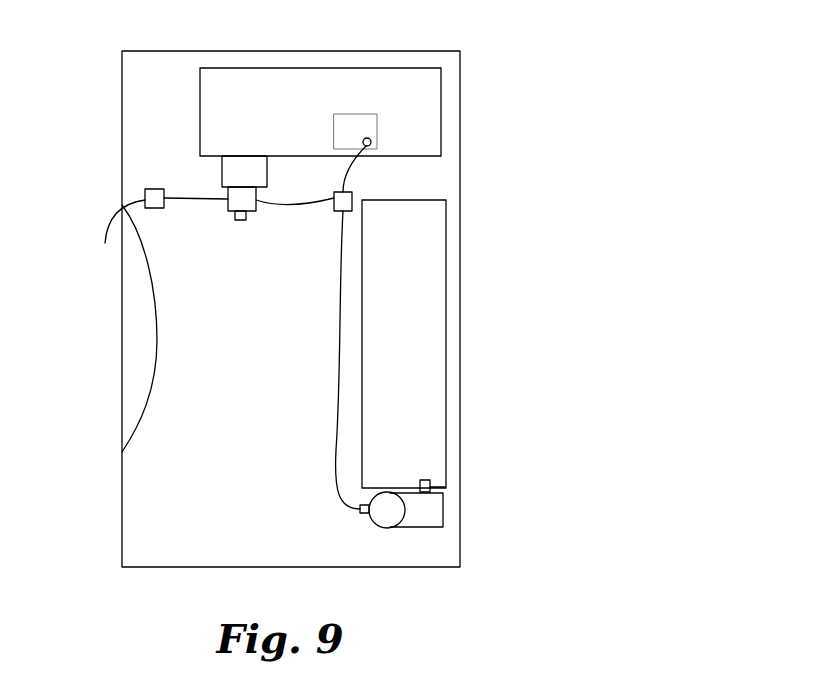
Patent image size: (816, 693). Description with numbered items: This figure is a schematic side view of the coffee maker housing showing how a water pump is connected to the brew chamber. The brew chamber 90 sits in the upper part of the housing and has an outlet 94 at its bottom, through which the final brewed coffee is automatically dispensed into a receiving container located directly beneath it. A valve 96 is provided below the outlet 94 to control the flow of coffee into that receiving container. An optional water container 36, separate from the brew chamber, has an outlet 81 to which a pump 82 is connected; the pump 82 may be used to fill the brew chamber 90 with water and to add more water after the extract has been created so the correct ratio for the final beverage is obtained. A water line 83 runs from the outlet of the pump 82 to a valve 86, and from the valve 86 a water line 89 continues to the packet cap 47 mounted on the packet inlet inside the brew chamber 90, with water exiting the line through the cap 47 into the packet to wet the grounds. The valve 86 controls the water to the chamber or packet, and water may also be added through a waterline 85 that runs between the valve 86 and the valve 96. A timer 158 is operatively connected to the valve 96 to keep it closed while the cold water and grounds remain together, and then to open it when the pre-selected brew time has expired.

The brew chamber 90 is at (419, 72).
The cap 47 is at (372, 140).
The water line 89 is at (352, 167).
The valve 86 is at (353, 193).
The outlet 94 is at (232, 168).
The valve 96 is at (227, 202).
The waterline 85 is at (288, 207).
The water line 83 is at (338, 309).
The water container 36 is at (430, 247).
The outlet 81 is at (432, 482).
The pump 82 is at (430, 515).
The timer 158 is at (114, 235).